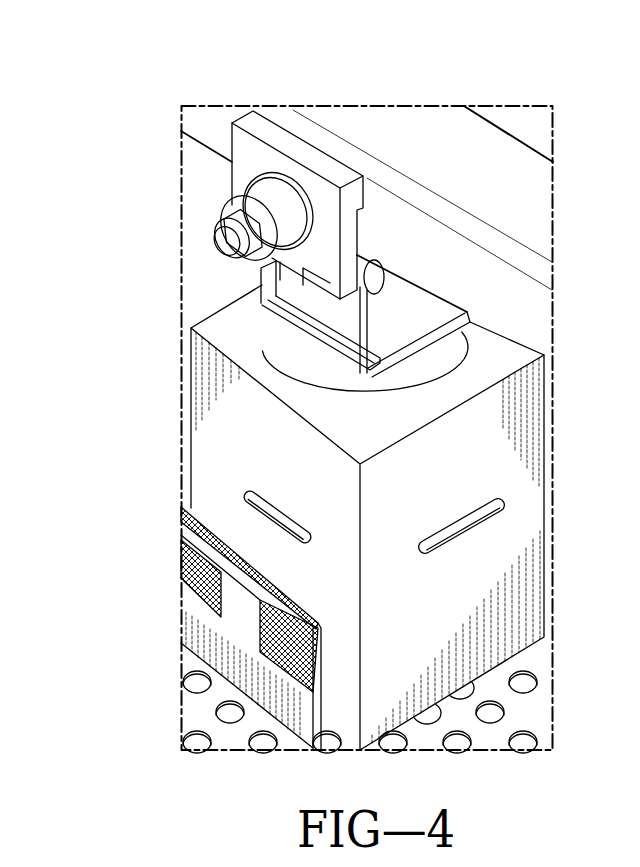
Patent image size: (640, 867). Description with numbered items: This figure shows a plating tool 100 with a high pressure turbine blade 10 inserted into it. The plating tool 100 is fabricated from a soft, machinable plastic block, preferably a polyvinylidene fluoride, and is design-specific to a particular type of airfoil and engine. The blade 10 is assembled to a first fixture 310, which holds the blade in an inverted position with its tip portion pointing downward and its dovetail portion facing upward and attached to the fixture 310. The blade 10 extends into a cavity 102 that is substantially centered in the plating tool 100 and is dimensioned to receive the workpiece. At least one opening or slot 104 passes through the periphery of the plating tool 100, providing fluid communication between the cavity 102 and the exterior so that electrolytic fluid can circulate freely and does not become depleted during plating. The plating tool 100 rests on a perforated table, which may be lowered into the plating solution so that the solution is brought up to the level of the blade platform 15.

The high pressure turbine blade 10 is at (393, 385).
The blade platform 15 is at (352, 372).
The plating tool 100 is at (222, 467).
The cavity 102 is at (455, 352).
The opening or slot 104 is at (215, 573).
The first fixture 310 is at (278, 138).